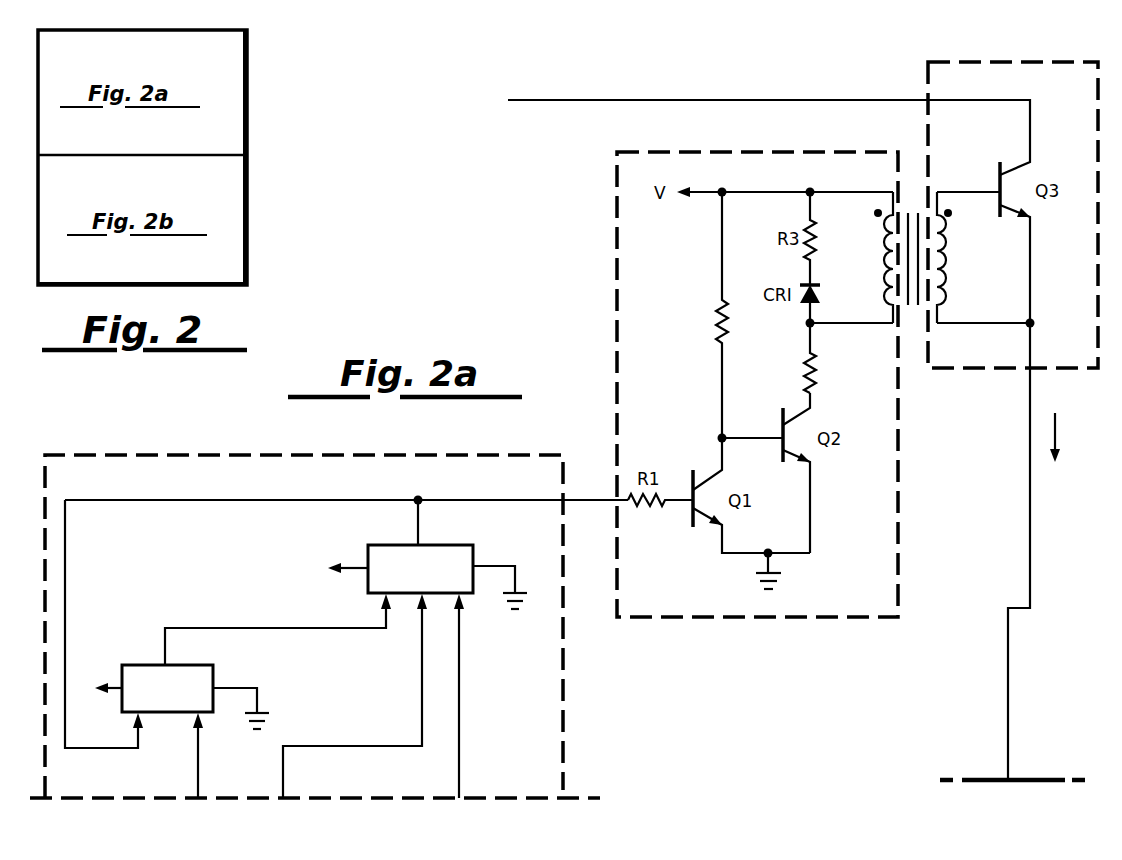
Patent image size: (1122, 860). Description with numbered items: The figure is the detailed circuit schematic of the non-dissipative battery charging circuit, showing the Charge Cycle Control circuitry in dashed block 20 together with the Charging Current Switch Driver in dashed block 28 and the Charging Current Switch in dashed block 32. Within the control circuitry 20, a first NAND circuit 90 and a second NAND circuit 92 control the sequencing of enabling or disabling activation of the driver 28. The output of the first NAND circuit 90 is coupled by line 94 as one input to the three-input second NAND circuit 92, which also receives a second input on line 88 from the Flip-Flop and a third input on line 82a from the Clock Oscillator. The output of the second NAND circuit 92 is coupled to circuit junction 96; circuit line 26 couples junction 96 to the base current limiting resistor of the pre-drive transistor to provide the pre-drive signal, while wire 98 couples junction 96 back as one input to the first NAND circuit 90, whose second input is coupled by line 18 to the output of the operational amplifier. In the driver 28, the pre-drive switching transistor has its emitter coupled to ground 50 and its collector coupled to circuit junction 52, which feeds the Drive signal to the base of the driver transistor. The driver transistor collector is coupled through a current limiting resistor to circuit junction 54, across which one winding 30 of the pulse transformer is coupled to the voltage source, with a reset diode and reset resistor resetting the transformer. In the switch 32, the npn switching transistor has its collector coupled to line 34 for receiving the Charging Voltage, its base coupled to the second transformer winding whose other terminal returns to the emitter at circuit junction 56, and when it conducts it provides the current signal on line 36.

The line 18 is at (203, 773).
The Charge Cycle Control circuitry 20 is at (108, 455).
The circuit line 26 is at (583, 500).
The Charging Current Switch Driver 28 is at (617, 232).
The winding of Pulse Transformer T1 30 is at (916, 348).
The Charging Current Switch 32 is at (928, 62).
The line 34 is at (623, 100).
The line 36 is at (1032, 507).
The ground 50 is at (772, 558).
The circuit junction 52 is at (720, 438).
The circuit junction 54 is at (808, 324).
The circuit junction 56 is at (1036, 323).
The line 82a is at (289, 773).
The line 88 is at (465, 773).
The first NAND circuit 90 is at (147, 665).
The second NAND circuit 92 is at (392, 545).
The line 94 is at (292, 628).
The circuit junction 96 is at (418, 500).
The wire 98 is at (67, 551).